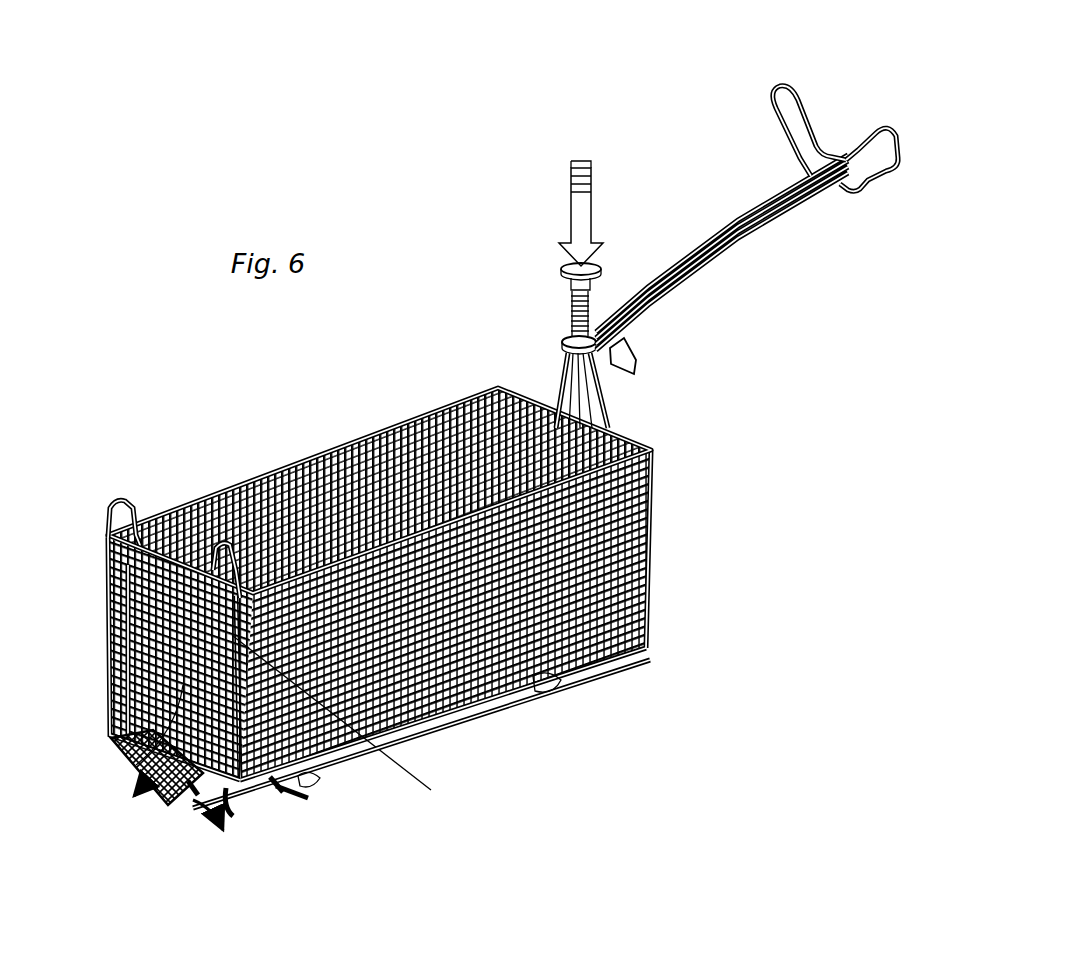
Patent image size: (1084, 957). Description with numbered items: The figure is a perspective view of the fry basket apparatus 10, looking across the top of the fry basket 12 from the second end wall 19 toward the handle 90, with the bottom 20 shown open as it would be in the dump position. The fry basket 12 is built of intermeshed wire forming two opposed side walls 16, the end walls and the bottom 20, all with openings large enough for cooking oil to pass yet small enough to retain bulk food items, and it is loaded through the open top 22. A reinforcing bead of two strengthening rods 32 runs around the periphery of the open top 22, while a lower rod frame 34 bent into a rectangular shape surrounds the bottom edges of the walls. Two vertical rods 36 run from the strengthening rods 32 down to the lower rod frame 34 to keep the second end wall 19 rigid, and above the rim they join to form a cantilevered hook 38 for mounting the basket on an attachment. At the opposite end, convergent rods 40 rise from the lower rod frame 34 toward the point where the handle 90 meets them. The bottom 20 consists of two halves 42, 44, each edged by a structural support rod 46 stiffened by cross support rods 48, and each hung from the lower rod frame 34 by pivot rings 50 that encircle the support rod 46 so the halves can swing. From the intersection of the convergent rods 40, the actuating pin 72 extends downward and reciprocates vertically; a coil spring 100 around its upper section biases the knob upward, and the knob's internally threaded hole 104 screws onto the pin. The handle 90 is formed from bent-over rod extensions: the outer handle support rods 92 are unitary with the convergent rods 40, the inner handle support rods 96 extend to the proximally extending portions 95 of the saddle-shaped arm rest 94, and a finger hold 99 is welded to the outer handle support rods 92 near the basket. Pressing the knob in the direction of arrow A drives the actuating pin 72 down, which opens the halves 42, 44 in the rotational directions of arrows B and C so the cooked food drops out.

The fry basket apparatus 10 is at (420, 547).
The fry basket 12 is at (456, 748).
The side walls 16 is at (357, 500).
The second end wall 19 is at (128, 758).
The bottom 20 is at (167, 806).
The open top 22 is at (490, 382).
The strengthening rods 32 is at (230, 470).
The lower rod frame 34 is at (638, 630).
The vertical rods 36 is at (105, 683).
The cantilevered hook 38 is at (98, 532).
The convergent rods 40 is at (600, 410).
The bottom half 42 is at (277, 790).
The bottom half 44 is at (150, 803).
The structural support rod 46 is at (147, 787).
The cross support rods 48 is at (287, 763).
The pivot rings 50 is at (310, 767).
The actuating pin 72 is at (555, 385).
The handle 90 is at (682, 227).
The outer handle support rods 92 is at (700, 290).
The arm rest 94 is at (785, 100).
The proximally extending portions 95 is at (836, 150).
The inner handle support rods 96 is at (800, 215).
The finger hold 99 is at (626, 344).
The coil spring 100 is at (560, 290).
The internally threaded hole 104 is at (600, 264).
The arrow A is at (585, 200).
The arrow B is at (212, 830).
The arrow C is at (125, 800).